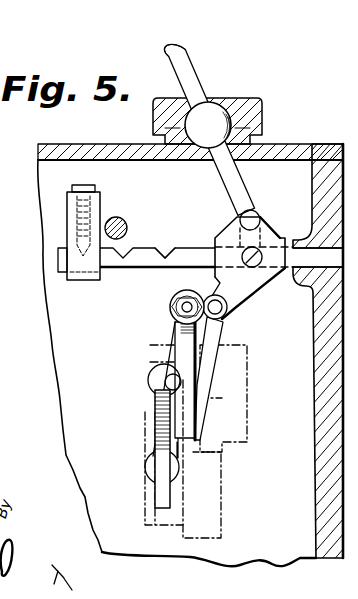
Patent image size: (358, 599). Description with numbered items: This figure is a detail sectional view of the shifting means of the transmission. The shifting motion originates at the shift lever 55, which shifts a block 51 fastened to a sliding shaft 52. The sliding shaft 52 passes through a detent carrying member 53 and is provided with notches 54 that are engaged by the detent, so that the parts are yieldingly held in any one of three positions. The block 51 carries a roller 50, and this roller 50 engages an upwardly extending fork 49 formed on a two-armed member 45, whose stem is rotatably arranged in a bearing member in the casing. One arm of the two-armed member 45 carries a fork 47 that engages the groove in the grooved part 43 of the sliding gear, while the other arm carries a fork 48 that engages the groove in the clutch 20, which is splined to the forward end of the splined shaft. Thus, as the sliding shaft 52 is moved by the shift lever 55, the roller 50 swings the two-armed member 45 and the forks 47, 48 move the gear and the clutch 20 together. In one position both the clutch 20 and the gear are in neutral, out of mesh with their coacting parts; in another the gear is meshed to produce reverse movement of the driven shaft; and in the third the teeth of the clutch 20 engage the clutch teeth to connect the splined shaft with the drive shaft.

The clutch 20 is at (247, 400).
The grooved part 43 is at (221, 497).
The two-armed member 45 is at (173, 362).
The fork 47 is at (155, 423).
The fork 48 is at (187, 349).
The upwardly extending fork 49 is at (237, 315).
The roller 50 is at (218, 295).
The block 51 is at (271, 228).
The sliding shaft 52 is at (148, 262).
The detent carrying member 53 is at (88, 273).
The notches 54 is at (161, 250).
The shift lever 55 is at (189, 75).